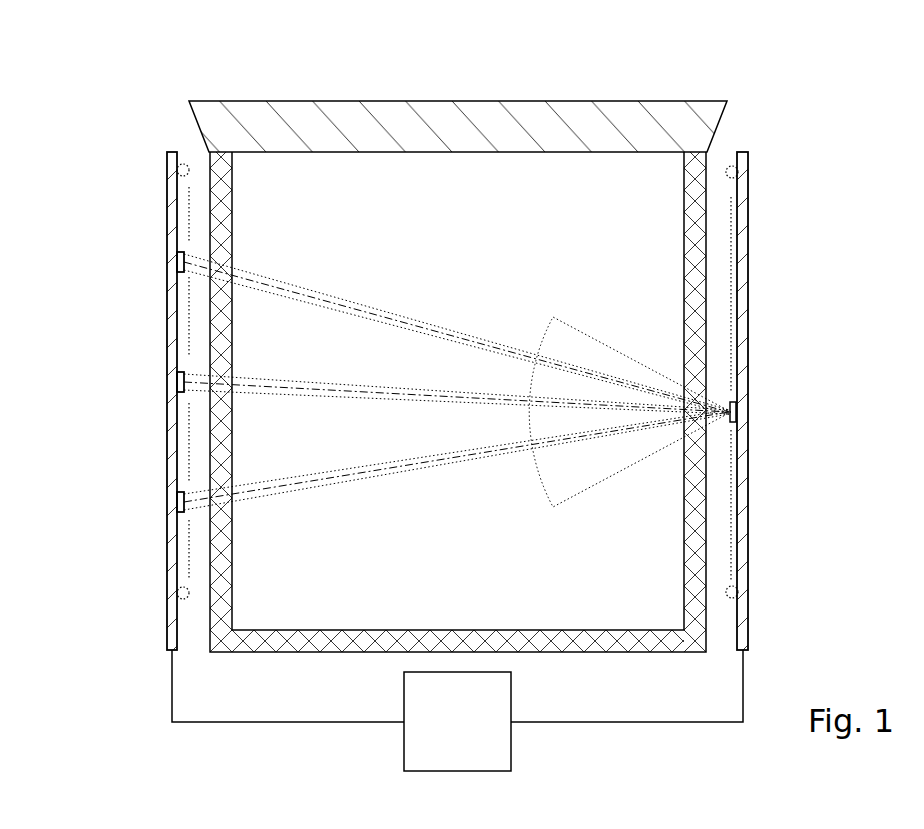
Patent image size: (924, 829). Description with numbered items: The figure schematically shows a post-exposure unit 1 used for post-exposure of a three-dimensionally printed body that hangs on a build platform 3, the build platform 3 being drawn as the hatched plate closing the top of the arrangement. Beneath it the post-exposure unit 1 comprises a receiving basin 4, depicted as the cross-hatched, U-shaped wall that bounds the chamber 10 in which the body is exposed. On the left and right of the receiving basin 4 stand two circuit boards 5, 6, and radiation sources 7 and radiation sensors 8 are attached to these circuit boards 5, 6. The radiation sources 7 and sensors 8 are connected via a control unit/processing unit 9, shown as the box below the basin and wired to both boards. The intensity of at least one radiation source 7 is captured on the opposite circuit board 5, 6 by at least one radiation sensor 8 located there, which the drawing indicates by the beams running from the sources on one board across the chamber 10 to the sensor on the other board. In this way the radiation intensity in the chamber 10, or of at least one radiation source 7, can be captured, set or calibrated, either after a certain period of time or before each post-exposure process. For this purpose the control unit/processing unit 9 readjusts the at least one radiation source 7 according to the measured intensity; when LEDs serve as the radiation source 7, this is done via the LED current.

The post-exposure unit 1 is at (834, 136).
The build platform 3 is at (512, 123).
The receiving basin 4 is at (693, 314).
The circuit board 5 is at (742, 260).
The circuit board 6 is at (170, 302).
The radiation source 7 is at (177, 172).
The radiation sensor 8 is at (177, 262).
The control unit/processing unit 9 is at (468, 737).
The chamber 10 is at (620, 138).